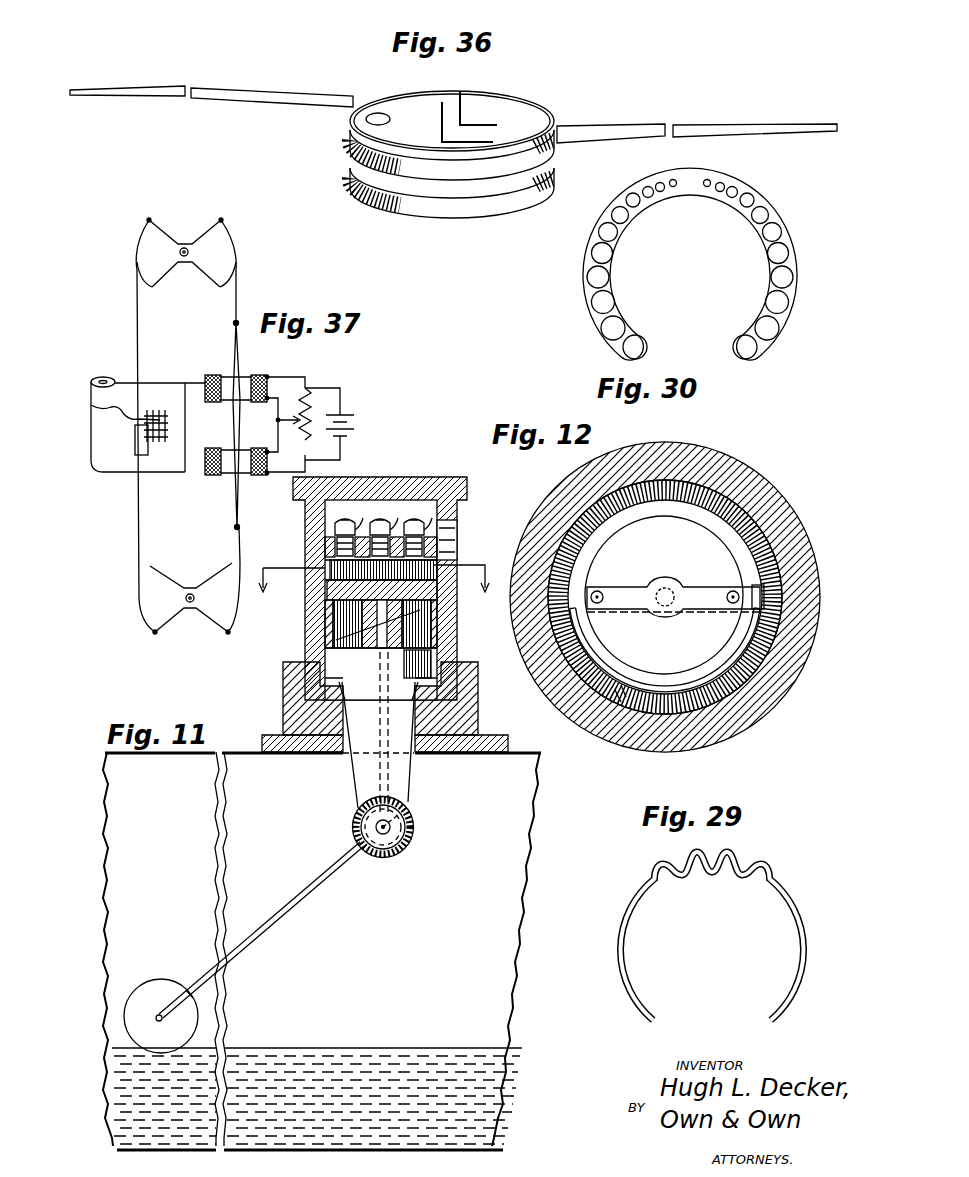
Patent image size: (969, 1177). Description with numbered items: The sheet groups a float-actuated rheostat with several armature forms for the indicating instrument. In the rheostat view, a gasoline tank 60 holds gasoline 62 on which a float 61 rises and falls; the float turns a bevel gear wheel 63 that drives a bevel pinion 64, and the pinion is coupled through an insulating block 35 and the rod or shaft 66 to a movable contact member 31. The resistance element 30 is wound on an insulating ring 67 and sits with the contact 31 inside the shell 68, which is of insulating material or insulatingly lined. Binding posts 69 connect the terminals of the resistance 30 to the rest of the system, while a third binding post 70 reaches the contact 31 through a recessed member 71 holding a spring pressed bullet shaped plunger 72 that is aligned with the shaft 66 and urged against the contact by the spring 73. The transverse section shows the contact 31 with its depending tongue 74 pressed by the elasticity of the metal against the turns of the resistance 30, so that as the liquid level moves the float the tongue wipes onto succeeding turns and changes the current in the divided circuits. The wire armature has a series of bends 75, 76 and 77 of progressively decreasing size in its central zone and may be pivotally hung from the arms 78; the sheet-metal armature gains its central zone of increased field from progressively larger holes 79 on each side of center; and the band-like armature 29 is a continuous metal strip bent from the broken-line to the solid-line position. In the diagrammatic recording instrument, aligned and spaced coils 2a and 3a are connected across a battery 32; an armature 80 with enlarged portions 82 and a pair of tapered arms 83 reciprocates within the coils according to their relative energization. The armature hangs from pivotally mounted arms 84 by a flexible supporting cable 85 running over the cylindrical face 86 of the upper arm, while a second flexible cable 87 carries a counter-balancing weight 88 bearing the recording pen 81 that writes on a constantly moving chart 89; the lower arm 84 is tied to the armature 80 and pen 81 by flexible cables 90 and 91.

In FIG. 36, the split spring band 29 is at (358, 144).
In FIG. 30, the progressively larger holes 79 is at (617, 350).
In FIG. 37, the pivotally mounted arms 84 is at (184, 243).
In FIG. 37, the cylindrical face 86 is at (237, 250).
In FIG. 37, the flexible supporting cable 85 is at (236, 322).
In FIG. 37, the second flexible cable 87 is at (137, 318).
In FIG. 37, the constantly moving chart 89 is at (120, 386).
In FIG. 37, the armature 80 is at (232, 370).
In FIG. 37, the coil 2a is at (252, 376).
In FIG. 37, the battery 32 is at (346, 418).
In FIG. 37, the enlarged portions 82 is at (242, 426).
In FIG. 37, the tapered arms 83 is at (237, 424).
In FIG. 37, the recording pen 81 is at (136, 436).
In FIG. 37, the counter-balancing weight 88 is at (134, 456).
In FIG. 37, the coil 3a is at (266, 476).
In FIG. 37, the flexible cable 91 is at (140, 548).
In FIG. 37, the flexible cable 90 is at (238, 548).
In FIG. 11, the shell 68 is at (306, 548).
In FIG. 12, the shell 68 is at (757, 698).
In FIG. 11, the spring 73 is at (366, 520).
In FIG. 11, the binding posts 69 is at (344, 522).
In FIG. 11, the third binding post 70 is at (398, 520).
In FIG. 11, the movable contact member 31 is at (437, 583).
In FIG. 12, the movable contact member 31 is at (695, 588).
In FIG. 11, the spring pressed bullet shaped plunger 72 is at (330, 584).
In FIG. 11, the recessed member 71 is at (336, 612).
In FIG. 11, the depending tongue 74 is at (432, 632).
In FIG. 12, the depending tongue 74 is at (748, 606).
In FIG. 11, the insulating block 35 is at (334, 646).
In FIG. 12, the insulating block 35 is at (735, 664).
In FIG. 11, the rod or shaft 66 is at (325, 662).
In FIG. 12, the rod or shaft 66 is at (665, 615).
In FIG. 11, the insulating ring 67 is at (458, 650).
In FIG. 11, the resistance element 30 is at (290, 686).
In FIG. 12, the resistance element 30 is at (768, 512).
In FIG. 11, the gasoline tank 60 is at (543, 924).
In FIG. 11, the gasoline 62 is at (390, 1048).
In FIG. 11, the bevel pinion 64 is at (402, 798).
In FIG. 11, the bevel gear wheel 63 is at (394, 853).
In FIG. 11, the float 61 is at (160, 999).
In FIG. 29, the arms 78 is at (626, 968).
In FIG. 29, the bend 77 is at (662, 884).
In FIG. 29, the bend 75 is at (694, 873).
In FIG. 29, the bend 76 is at (730, 878).